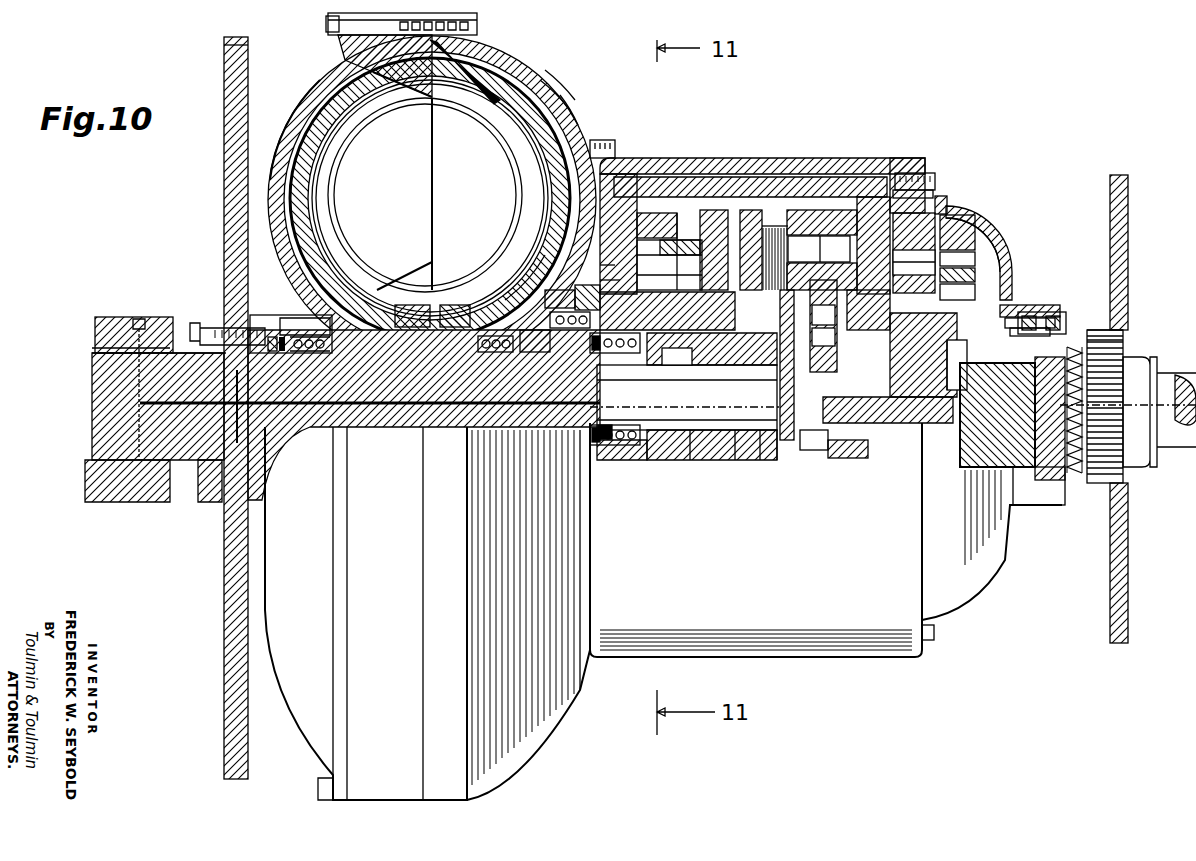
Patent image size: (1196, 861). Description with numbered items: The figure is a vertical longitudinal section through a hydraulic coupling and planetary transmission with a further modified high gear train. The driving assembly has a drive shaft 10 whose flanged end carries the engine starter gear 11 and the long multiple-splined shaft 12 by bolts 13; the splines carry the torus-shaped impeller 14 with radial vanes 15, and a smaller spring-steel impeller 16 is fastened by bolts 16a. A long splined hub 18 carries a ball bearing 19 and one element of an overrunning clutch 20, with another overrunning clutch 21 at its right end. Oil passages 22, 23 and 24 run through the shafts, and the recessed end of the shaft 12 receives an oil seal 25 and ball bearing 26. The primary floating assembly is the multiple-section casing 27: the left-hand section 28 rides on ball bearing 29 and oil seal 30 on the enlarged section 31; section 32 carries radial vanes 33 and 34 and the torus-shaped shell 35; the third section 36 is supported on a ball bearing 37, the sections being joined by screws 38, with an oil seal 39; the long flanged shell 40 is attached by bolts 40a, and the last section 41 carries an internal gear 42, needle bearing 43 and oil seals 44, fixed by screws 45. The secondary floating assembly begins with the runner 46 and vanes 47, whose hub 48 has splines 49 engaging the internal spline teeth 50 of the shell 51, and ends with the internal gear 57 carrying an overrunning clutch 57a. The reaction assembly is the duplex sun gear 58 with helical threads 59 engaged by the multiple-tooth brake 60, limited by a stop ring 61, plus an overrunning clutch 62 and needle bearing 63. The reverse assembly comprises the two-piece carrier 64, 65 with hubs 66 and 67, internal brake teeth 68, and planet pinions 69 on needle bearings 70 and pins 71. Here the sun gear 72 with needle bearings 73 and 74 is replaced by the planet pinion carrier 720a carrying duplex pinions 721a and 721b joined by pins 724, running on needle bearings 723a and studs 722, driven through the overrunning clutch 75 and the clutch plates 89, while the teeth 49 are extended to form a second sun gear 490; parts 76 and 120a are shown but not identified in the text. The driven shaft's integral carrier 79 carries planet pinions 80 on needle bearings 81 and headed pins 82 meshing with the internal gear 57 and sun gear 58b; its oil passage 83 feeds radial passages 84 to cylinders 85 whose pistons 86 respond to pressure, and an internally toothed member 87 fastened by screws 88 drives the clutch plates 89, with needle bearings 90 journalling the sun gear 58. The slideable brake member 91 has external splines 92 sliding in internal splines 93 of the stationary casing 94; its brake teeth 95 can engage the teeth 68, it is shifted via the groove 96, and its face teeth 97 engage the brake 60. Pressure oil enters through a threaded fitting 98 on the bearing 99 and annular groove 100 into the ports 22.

The drive shaft 10 is at (100, 412).
The engine starter gear 11 is at (236, 163).
The long multiple-splined shaft 12 is at (402, 427).
The bolts 13 is at (193, 323).
The torus shaped impeller 14 is at (302, 118).
The radial vanes 15 is at (426, 232).
The smaller impeller 16 is at (325, 196).
The bolts 16a is at (425, 312).
The long multiple splined hub 18 is at (500, 352).
The ball bearing 19 is at (470, 312).
The overrunning clutch 20 is at (465, 340).
The overrunning clutch 21 is at (685, 397).
The oil passage 22 is at (140, 442).
The oil passage 23 is at (185, 462).
The oil passage 24 is at (420, 440).
The oil seal 25 is at (580, 470).
The ball bearing 26 is at (612, 447).
The multiple section casing 27 is at (478, 22).
The left hand section 28 is at (312, 90).
The ball bearing 29 is at (305, 352).
The oil seal 30 is at (274, 352).
The enlarged section 31 is at (322, 352).
The casing section 32 is at (385, 66).
The radial vanes 33 is at (455, 77).
The radial vanes 34 is at (476, 146).
The torus-shaped shell 35 is at (514, 162).
The third section 36 is at (548, 84).
The ball bearing 37 is at (548, 300).
The screws 38 is at (329, 30).
The oil seal 39 is at (598, 432).
The fourth section 40 is at (700, 160).
The bolts 40a is at (612, 142).
The last section 41 is at (982, 216).
The internal gear 42 is at (965, 208).
The needle bearing 43 is at (1010, 305).
The oil seals 44 is at (1052, 318).
The screws 45 is at (940, 185).
The runner 46 is at (556, 106).
The radial vanes 47 is at (512, 92).
The hub 48 is at (535, 352).
The multiple splines 49 is at (560, 292).
The internal spline teeth 50 is at (585, 290).
The shell 51 is at (628, 180).
The internal gear 57 is at (835, 215).
The overrunning clutch 57a is at (913, 266).
The duplex sun gear 58 is at (905, 400).
The sun gear 58b is at (915, 200).
The multiple helical threads 59 is at (990, 410).
The multiple teeth brake 60 is at (1055, 480).
The stop ring 61 is at (975, 420).
The overrunning clutch 62 is at (860, 330).
The needle bearing 63 is at (888, 360).
The planetary pinion carrier section 64 is at (962, 250).
The planetary pinion carrier section 65 is at (948, 205).
The hub 66 is at (823, 337).
The hub 67 is at (1018, 322).
The internal brake teeth 68 is at (1030, 330).
The planet pinions 69 is at (950, 228).
The needle bearings 70 is at (960, 270).
The pins 71 is at (958, 290).
The sun gear 72 is at (692, 460).
The needle bearing 73 is at (712, 422).
The needle bearing 74 is at (782, 460).
The overrunning clutch 75 is at (737, 460).
The ring 76 is at (762, 460).
The planet pinion carrier 79 is at (795, 442).
The planet pinions 80 is at (870, 210).
The needle bearings 81 is at (895, 232).
The headed pins 82 is at (832, 249).
The longitudinal oil passage 83 is at (668, 430).
The radial oil passages 84 is at (810, 450).
The small cylinders 85 is at (823, 326).
The small pistons 86 is at (819, 249).
The internally toothed member 87 is at (750, 225).
The screws 88 is at (806, 212).
The multiple clutch plates 89 is at (772, 215).
The needle bearings 90 is at (872, 424).
The slideable brake member 91 is at (1125, 348).
The external spline teeth 92 is at (1120, 325).
The internal spline teeth 93 is at (1125, 334).
The stationary transmission casing 94 is at (1129, 196).
The external brake teeth 95 is at (950, 385).
The groove 96 is at (1160, 372).
The multiple teeth 97 is at (1075, 475).
The threaded fitting 98 is at (137, 318).
The bearing 99 is at (97, 318).
The annular groove 100 is at (140, 348).
The sleeve 120a is at (712, 368).
The second sun gear 490 is at (595, 440).
The planet pinion carrier 720a is at (715, 210).
The duplex planetary pinion 721a is at (683, 235).
The duplex planetary pinion 721b is at (655, 213).
The stud 722 is at (608, 268).
The needle bearings 723a is at (669, 265).
The pins 724 is at (615, 282).